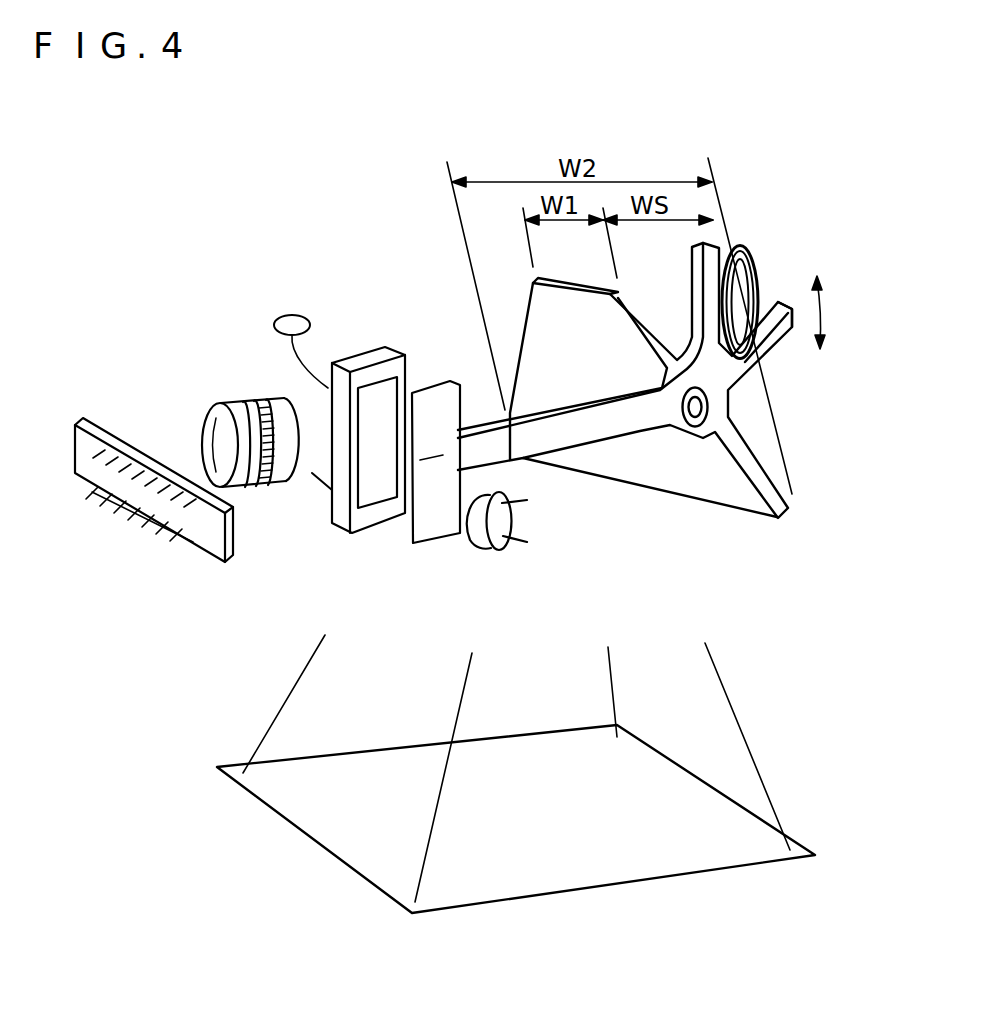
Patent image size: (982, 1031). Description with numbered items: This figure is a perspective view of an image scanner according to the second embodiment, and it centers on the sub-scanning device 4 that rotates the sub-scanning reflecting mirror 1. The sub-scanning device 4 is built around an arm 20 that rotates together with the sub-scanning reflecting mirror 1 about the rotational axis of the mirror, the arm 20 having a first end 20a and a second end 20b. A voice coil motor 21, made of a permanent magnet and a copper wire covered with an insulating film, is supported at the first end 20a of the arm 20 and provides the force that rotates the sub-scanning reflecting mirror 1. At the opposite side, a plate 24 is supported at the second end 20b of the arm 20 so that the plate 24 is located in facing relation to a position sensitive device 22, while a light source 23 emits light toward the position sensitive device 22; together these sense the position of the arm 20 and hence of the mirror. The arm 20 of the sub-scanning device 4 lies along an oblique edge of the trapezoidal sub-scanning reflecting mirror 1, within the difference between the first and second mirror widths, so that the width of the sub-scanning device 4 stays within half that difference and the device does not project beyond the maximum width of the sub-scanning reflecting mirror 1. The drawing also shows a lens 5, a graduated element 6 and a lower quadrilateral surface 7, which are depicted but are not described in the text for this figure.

The sub-scanning reflecting mirror 1 is at (677, 500).
The sub-scanning device 4 is at (628, 437).
The lens 5 is at (268, 487).
The scale plate 6 is at (120, 433).
The projection surface 7 is at (622, 887).
The arm 20 is at (567, 435).
The first end of the arm 20a is at (787, 333).
The second end of the arm 20b is at (507, 413).
The voice coil motor 21 is at (748, 250).
The position sensitive device 22 is at (377, 527).
The light source 23 is at (480, 533).
The plate 24 is at (442, 527).